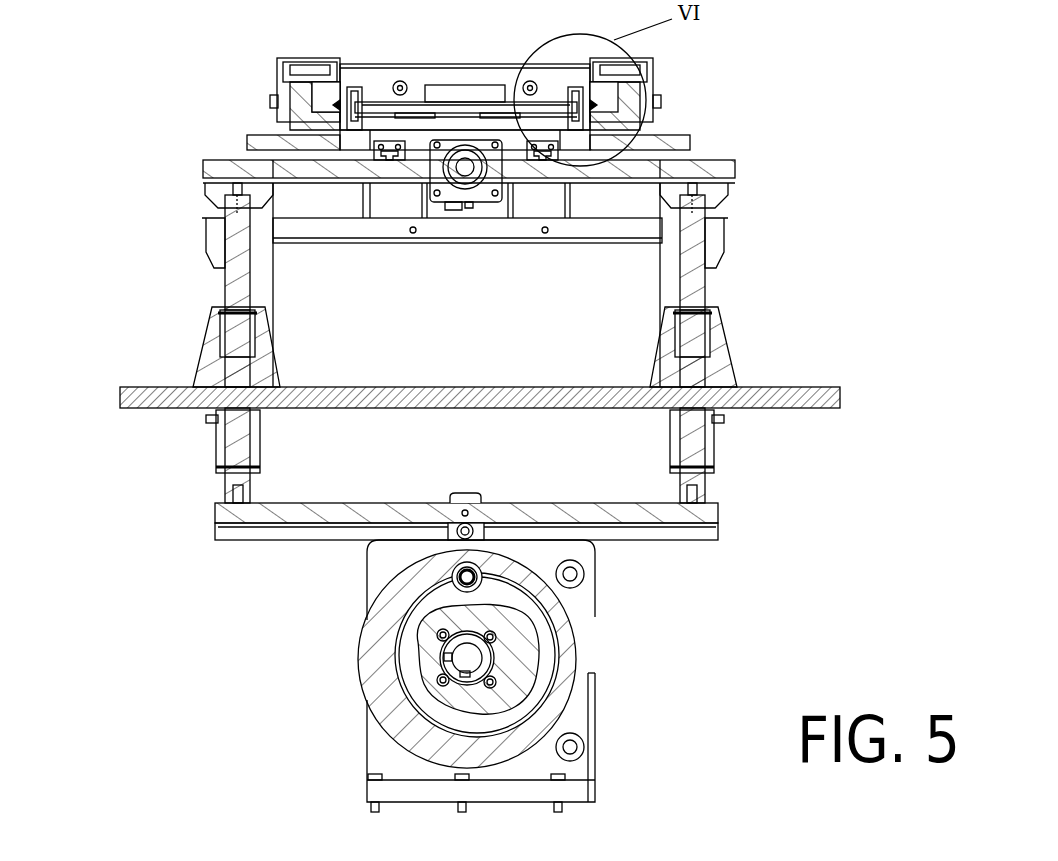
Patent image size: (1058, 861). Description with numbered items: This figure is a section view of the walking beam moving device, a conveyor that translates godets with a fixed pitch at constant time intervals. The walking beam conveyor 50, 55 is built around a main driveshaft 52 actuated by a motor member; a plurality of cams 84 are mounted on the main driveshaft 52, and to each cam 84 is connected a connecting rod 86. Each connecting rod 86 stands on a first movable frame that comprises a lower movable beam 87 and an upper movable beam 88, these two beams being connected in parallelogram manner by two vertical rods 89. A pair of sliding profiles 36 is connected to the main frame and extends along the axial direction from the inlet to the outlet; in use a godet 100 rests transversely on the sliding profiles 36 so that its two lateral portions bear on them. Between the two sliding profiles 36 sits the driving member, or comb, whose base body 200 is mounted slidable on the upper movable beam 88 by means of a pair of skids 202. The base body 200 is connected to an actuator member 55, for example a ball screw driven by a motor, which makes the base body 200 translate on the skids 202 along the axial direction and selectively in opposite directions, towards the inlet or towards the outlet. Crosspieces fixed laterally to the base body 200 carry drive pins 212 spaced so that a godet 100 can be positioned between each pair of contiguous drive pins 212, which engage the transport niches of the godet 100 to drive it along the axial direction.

The walking beam conveyor 50 is at (186, 676).
The main driveshaft 52 is at (470, 663).
The actuator member 55 is at (470, 188).
The sliding profiles 36 is at (296, 123).
The cams 84 is at (570, 645).
The connecting rod 86 is at (467, 512).
The lower movable beam 87 is at (705, 515).
The upper movable beam 88 is at (222, 171).
The vertical rods 89 is at (232, 293).
The godet 100 is at (385, 80).
The base body 200 is at (456, 128).
The skids 202 is at (388, 160).
The drive pins 212 is at (350, 95).